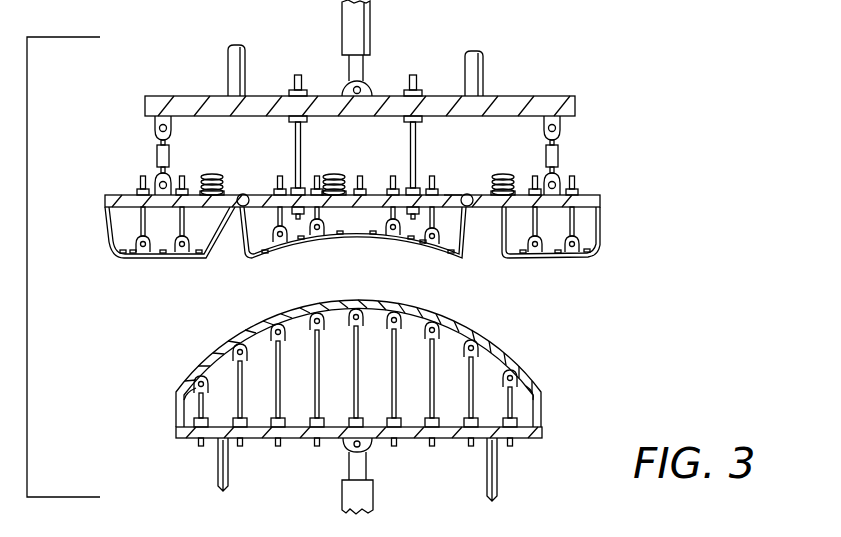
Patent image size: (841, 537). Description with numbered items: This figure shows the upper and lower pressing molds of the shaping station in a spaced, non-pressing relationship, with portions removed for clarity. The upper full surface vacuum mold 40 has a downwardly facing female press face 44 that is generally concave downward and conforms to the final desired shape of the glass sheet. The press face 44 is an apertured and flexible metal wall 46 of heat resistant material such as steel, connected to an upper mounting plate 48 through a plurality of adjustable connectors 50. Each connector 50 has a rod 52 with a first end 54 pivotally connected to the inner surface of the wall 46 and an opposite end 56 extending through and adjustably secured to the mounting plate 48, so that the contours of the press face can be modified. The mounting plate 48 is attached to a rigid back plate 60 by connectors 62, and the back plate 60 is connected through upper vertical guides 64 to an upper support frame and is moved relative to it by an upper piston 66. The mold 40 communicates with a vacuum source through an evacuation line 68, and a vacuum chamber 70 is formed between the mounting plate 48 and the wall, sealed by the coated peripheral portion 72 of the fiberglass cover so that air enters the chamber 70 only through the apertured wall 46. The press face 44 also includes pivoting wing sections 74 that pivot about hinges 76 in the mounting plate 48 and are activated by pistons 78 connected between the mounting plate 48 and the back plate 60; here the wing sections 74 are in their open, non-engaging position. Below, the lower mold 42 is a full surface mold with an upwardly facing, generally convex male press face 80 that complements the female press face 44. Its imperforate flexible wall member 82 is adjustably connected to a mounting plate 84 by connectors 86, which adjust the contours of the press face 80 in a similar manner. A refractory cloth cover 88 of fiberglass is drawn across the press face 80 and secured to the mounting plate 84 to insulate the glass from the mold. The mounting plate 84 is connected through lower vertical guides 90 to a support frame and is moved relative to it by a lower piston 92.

The upper full surface vacuum mold 40 is at (350, 146).
The lower mold 42 is at (371, 407).
The female press face 44 is at (281, 245).
The apertured flexible metal wall 46 is at (313, 234).
The upper mounting plate 48 is at (453, 193).
The adjustable connectors 50 is at (434, 222).
The rod 52 is at (386, 226).
The first end 54 is at (421, 241).
The opposite end 56 is at (394, 177).
The rigid back plate 60 is at (145, 101).
The connectors 62 is at (409, 130).
The upper vertical guides 64 is at (228, 62).
The upper piston 66 is at (372, 6).
The evacuation line 68 is at (324, 174).
The vacuum chamber 70 is at (338, 217).
The peripheral portion 72 is at (106, 222).
The pivoting wing sections 74 is at (598, 194).
The hinges 76 is at (243, 194).
The pistons 78 is at (157, 157).
The male press face 80 is at (512, 357).
The imperforate flexible wall member 82 is at (186, 398).
The mounting plate 84 is at (181, 439).
The connectors 86 is at (238, 372).
The refractory cloth cover 88 is at (540, 386).
The lower vertical guides 90 is at (229, 462).
The lower piston 92 is at (374, 490).